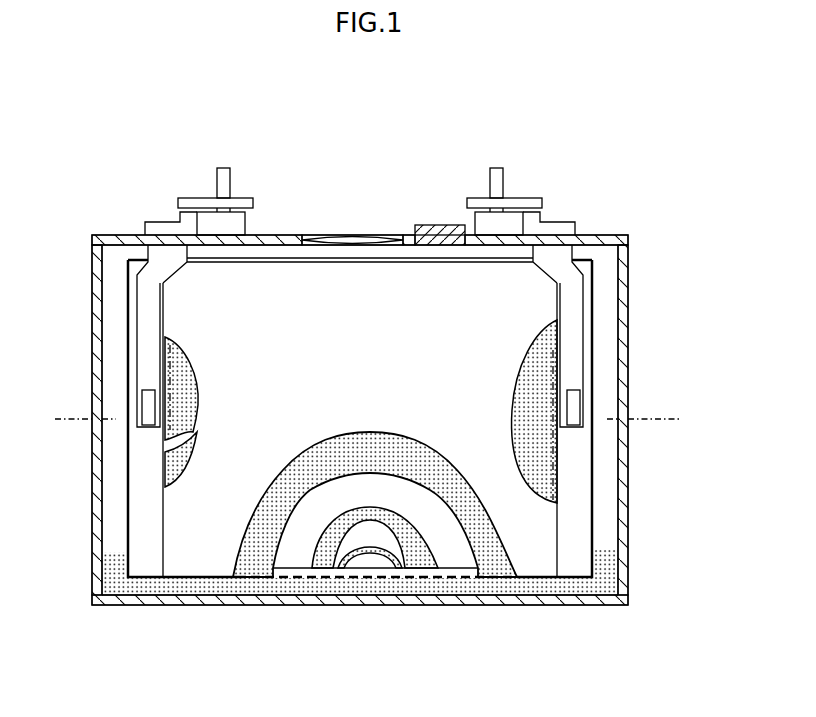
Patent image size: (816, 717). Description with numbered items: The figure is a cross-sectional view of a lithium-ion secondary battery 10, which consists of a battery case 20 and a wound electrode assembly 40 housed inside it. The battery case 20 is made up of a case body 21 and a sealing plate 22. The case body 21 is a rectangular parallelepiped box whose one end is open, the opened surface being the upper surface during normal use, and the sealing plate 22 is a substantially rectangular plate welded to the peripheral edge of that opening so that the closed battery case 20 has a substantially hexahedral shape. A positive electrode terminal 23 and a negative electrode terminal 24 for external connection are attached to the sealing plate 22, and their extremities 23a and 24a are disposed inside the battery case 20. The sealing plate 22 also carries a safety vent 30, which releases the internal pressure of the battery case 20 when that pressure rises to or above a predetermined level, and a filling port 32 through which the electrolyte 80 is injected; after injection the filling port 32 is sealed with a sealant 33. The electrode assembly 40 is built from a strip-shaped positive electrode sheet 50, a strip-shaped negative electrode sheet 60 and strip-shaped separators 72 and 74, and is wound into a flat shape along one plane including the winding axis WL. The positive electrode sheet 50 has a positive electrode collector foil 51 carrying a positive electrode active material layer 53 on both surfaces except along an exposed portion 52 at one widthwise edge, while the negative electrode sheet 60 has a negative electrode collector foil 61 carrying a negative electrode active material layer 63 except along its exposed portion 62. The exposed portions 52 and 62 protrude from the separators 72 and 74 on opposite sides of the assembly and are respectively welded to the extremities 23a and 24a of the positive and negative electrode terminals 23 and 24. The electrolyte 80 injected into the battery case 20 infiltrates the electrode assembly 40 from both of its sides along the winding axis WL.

The lithium-ion secondary battery 10 is at (638, 198).
The battery case 20 is at (468, 612).
The case body 21 is at (632, 565).
The sealing plate 22 is at (292, 235).
The positive electrode terminal 23 is at (208, 183).
The extremity of positive electrode terminal 23a is at (142, 398).
The negative electrode terminal 24 is at (512, 183).
The extremity of negative electrode terminal 24a is at (582, 398).
The safety vent 30 is at (352, 235).
The filling port 32 is at (448, 205).
The sealant 33 is at (435, 223).
The electrode assembly 40 is at (265, 283).
The positive electrode sheet 50 is at (332, 557).
The positive electrode collector foil 51 is at (127, 535).
The exposed portion 52 is at (143, 555).
The positive electrode active material layer 53 is at (192, 375).
The negative electrode sheet 60 is at (165, 473).
The negative electrode collector foil 61 is at (593, 470).
The exposed portion 62 is at (580, 445).
The negative electrode active material layer 63 is at (523, 352).
The separator 72 is at (198, 512).
The separator 74 is at (165, 443).
The electrolyte 80 is at (563, 582).
The winding axis WL is at (680, 418).